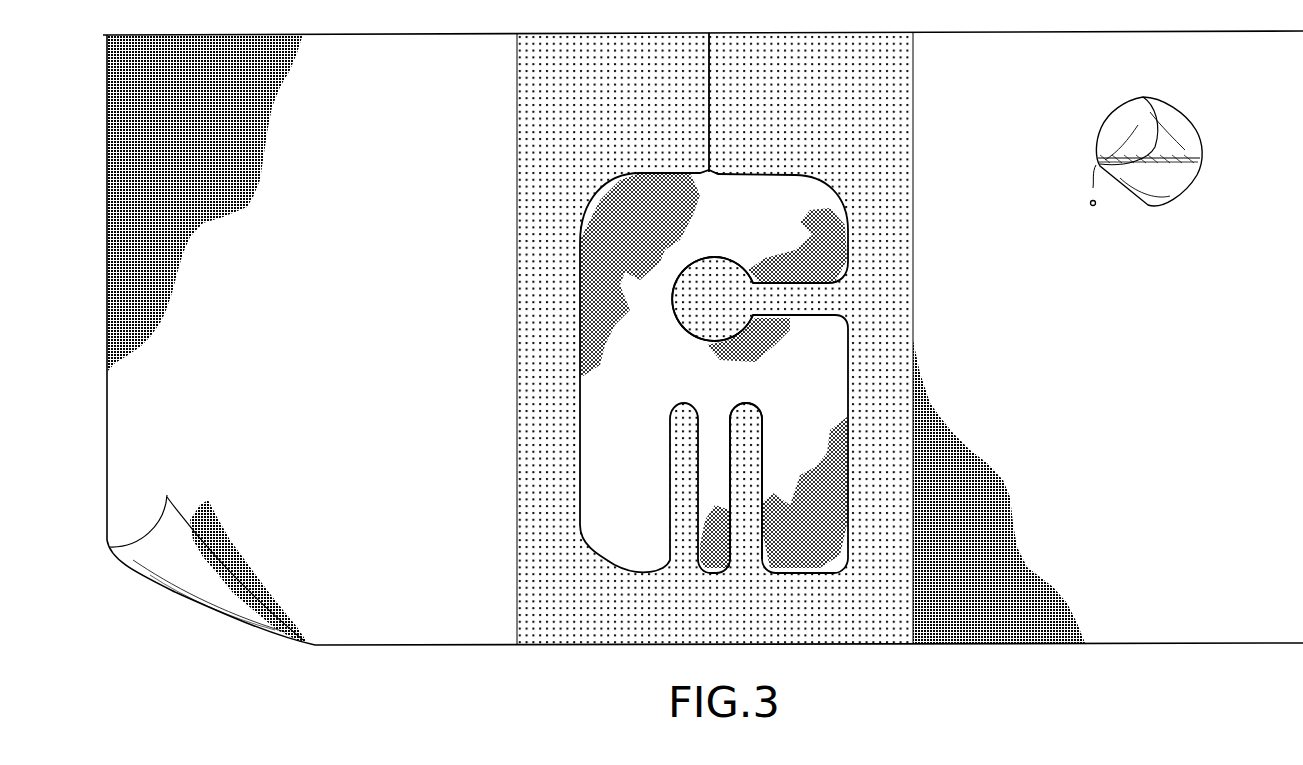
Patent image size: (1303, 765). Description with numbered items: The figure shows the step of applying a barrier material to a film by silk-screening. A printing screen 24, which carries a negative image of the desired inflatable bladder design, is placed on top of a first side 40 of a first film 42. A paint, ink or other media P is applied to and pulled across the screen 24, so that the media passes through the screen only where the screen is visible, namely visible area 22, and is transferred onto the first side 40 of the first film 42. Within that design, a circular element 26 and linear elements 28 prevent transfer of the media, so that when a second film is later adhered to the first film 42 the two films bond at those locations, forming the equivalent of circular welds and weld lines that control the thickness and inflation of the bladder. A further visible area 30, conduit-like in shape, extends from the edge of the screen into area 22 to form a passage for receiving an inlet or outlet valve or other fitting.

The visible area of screen 22 is at (592, 280).
The printing screen 24 is at (512, 155).
The circular element 26 is at (723, 288).
The linear elements 28 is at (748, 477).
The visible area of screen 30 is at (712, 128).
The first side 40 is at (130, 285).
The first film 42 is at (1285, 612).
The paint, ink or other media P is at (1188, 133).